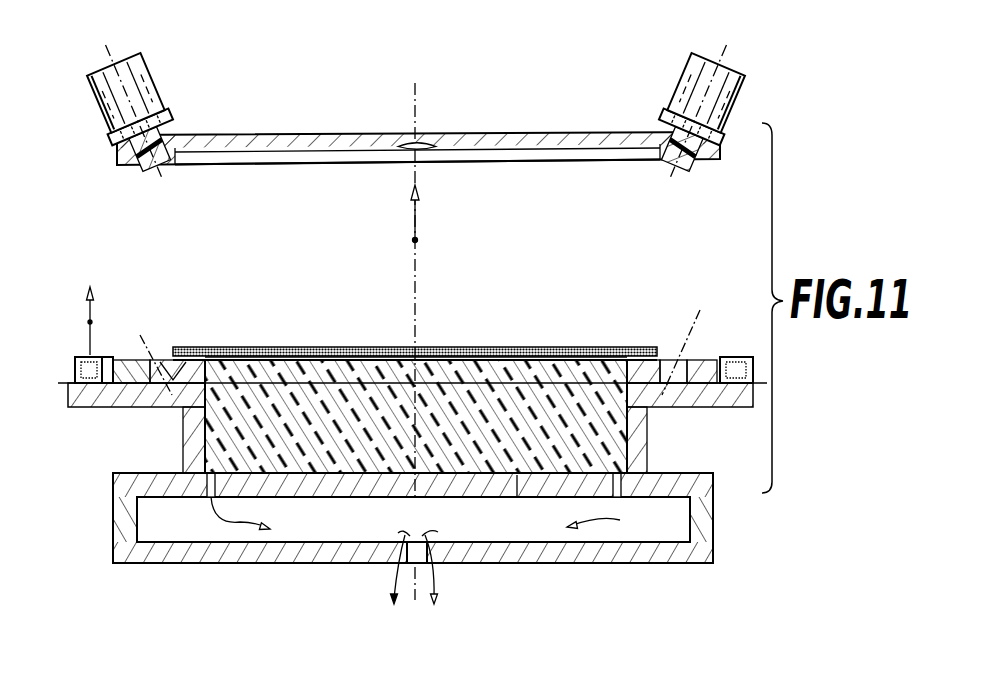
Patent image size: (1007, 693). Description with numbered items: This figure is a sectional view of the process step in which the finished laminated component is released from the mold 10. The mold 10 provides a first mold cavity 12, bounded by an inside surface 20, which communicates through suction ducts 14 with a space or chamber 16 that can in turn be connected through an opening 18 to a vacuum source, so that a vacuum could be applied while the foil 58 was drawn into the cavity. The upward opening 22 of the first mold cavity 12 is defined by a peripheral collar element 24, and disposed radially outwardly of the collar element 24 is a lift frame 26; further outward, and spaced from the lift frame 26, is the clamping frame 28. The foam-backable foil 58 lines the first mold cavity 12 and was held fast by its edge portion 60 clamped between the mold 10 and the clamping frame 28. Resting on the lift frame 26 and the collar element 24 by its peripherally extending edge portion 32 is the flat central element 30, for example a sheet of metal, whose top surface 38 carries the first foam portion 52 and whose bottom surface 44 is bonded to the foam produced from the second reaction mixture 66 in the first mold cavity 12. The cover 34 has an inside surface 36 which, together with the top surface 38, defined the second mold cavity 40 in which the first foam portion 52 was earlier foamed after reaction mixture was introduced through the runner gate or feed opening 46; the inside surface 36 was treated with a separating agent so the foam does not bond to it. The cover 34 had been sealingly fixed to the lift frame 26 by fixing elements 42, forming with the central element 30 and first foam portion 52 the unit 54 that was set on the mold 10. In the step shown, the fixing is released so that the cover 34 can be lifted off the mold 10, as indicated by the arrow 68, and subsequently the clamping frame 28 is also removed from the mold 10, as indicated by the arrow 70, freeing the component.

The mold 10 is at (100, 517).
The first mold cavity 12 is at (306, 378).
The suction ducts 14 is at (210, 498).
The space or chamber 16 is at (298, 517).
The opening 18 is at (415, 583).
The inside surface 20 is at (192, 447).
The upward opening 22 is at (460, 375).
The collar element 24 is at (200, 355).
The lift frame 26 is at (133, 360).
The clamping frame 28 is at (74, 369).
The flat central element 30 is at (560, 356).
The edge portion 32 is at (640, 350).
The cover 34 is at (283, 138).
The inside surface of the cover 36 is at (505, 150).
The top surface of the central element 38 is at (360, 358).
The second mold cavity 40 is at (585, 153).
The fixing elements 42 is at (132, 80).
The bottom surface of the central element 44 is at (268, 370).
The runner gate or feed opening 46 is at (418, 135).
The first foam portion 52 is at (523, 355).
The unit 54 is at (106, 147).
The foil 58 is at (350, 475).
The edge portion of the foil 60 is at (160, 382).
The second reaction mixture 66 is at (517, 470).
The arrow 68 is at (418, 240).
The arrow 70 is at (88, 322).